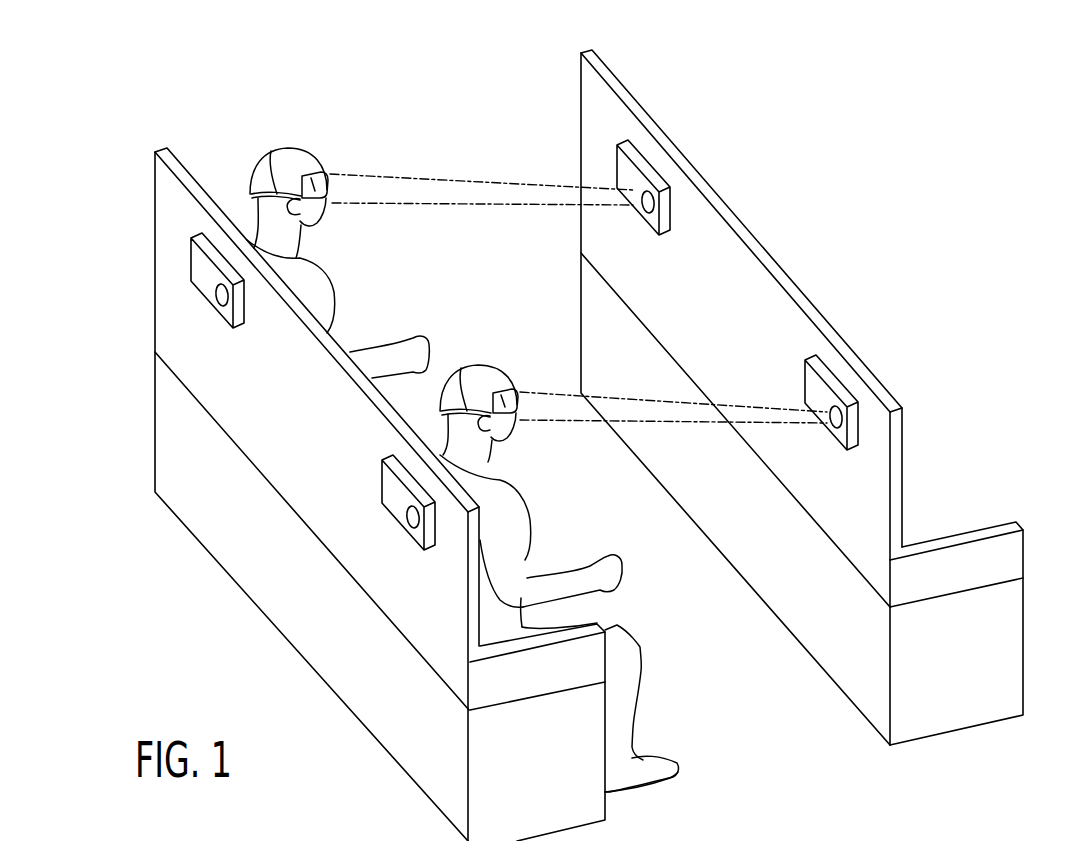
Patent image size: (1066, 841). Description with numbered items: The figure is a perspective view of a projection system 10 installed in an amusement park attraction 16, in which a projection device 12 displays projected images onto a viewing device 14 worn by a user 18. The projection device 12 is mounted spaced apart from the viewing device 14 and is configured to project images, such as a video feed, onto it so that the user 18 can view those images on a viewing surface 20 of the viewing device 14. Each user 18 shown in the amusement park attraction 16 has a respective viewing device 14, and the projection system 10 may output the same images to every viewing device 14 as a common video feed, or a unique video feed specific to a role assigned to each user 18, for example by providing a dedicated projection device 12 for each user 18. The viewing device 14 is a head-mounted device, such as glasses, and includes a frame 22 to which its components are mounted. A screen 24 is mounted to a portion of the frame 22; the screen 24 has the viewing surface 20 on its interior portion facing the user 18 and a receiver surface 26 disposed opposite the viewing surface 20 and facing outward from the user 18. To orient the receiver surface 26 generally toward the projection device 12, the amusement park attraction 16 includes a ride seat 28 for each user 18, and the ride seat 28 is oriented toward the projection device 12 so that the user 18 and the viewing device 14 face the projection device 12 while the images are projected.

The projection system 10 is at (802, 397).
The projection device 12 is at (650, 166).
The viewing device 14 is at (317, 219).
The amusement park attraction 16 is at (802, 378).
The user 18 is at (559, 578).
The viewing surface 20 is at (498, 420).
The frame 22 is at (272, 151).
The screen 24 is at (291, 130).
The receiver surface 26 is at (326, 163).
The ride seat 28 is at (190, 343).